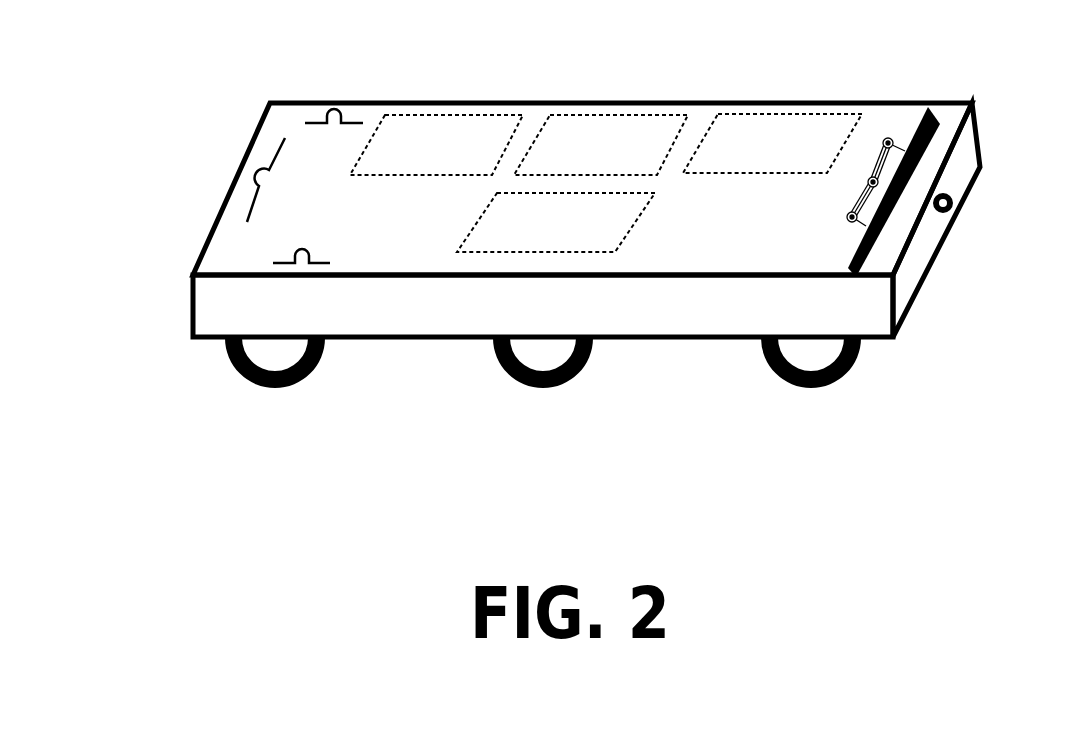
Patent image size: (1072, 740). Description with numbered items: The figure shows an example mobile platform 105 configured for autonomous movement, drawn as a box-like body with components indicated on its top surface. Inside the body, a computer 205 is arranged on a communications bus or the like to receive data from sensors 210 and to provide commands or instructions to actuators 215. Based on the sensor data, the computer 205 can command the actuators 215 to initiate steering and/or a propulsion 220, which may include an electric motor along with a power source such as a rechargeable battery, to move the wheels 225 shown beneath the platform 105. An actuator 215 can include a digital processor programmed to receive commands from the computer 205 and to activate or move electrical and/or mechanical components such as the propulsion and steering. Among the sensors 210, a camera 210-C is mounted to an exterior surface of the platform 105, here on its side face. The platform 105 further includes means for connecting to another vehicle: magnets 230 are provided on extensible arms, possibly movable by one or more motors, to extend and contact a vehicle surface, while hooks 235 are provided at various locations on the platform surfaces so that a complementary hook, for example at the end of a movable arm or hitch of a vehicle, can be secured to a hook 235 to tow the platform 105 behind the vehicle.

The mobile platform 105 is at (586, 220).
The computer 205 is at (436, 145).
The sensors 210 is at (601, 145).
The actuators 215 is at (772, 143).
The propulsion 220 is at (556, 222).
The wheels 225 is at (242, 386).
The magnets 230 is at (922, 122).
The camera 210-C is at (957, 212).
The hooks 235 is at (322, 102).